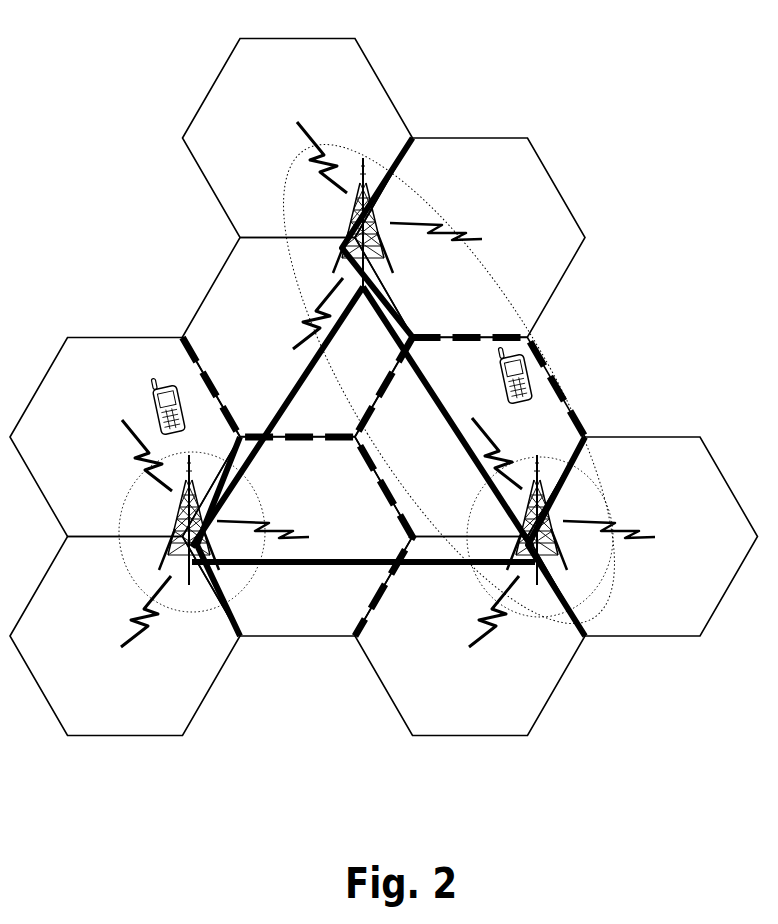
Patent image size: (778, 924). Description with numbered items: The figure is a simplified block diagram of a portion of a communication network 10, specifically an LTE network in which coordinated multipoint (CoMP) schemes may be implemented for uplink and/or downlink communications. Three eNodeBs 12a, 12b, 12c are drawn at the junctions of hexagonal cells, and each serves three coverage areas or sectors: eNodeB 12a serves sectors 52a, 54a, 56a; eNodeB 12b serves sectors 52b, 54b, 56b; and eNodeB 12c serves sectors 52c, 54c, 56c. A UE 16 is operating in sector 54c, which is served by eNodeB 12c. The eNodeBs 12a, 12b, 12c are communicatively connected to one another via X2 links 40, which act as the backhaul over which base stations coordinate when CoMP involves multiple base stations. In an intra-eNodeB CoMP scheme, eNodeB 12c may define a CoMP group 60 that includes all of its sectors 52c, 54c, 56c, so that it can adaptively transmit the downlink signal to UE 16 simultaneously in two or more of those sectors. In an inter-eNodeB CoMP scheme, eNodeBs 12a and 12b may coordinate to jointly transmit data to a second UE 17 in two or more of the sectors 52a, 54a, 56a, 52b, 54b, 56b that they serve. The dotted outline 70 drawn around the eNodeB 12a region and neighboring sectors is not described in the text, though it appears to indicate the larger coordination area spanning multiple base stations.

The communication network 10 is at (114, 98).
The eNodeB 12a is at (385, 248).
The eNodeB 12b is at (558, 560).
The eNodeB 12c is at (168, 553).
The UE 16 is at (157, 378).
The UE 17 is at (530, 398).
The X2 links 40 is at (307, 377).
The sector 52a is at (498, 167).
The sector 52b is at (673, 466).
The sector 52c is at (318, 474).
The sector 54a is at (320, 66).
The sector 54b is at (494, 366).
The sector 54c is at (144, 365).
The sector 56a is at (317, 266).
The sector 56b is at (497, 727).
The sector 56c is at (144, 727).
The CoMP group 60 is at (258, 572).
The coverage area 70 is at (483, 271).